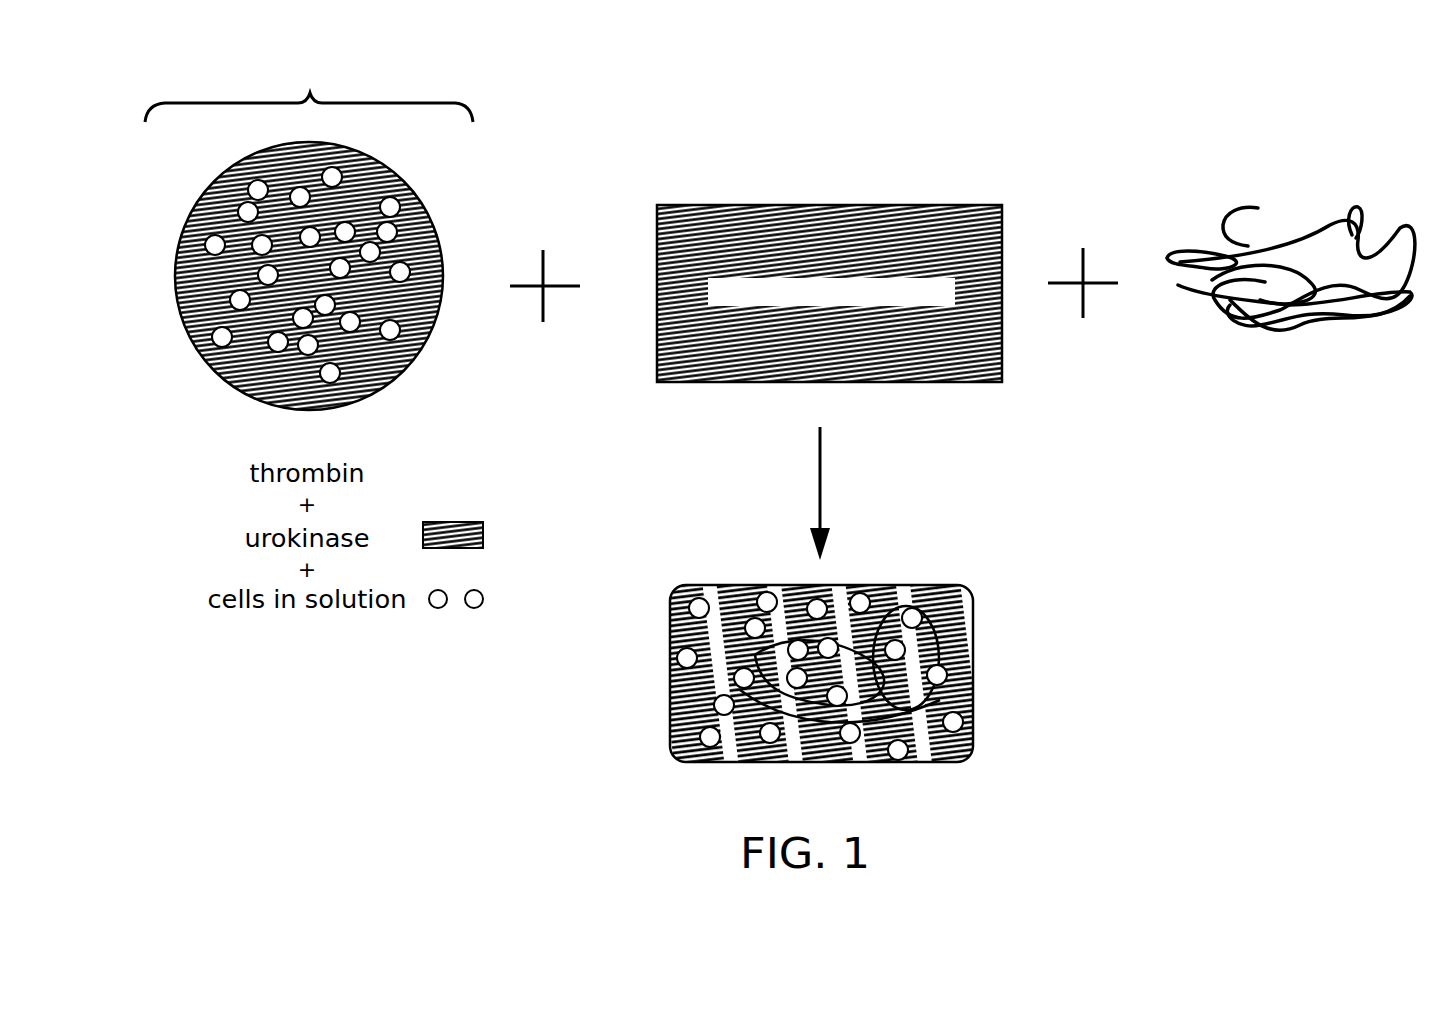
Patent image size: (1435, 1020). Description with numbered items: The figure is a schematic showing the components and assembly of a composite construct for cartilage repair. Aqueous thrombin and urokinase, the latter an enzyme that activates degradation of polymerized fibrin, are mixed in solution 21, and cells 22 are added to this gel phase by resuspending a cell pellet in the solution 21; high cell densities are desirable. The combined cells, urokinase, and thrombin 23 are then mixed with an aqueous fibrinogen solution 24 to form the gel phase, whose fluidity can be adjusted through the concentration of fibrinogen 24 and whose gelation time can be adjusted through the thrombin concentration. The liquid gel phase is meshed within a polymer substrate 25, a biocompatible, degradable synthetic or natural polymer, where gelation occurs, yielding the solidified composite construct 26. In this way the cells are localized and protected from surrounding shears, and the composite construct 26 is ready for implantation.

The solution 21 is at (400, 357).
The cells 22 is at (388, 207).
The cells, urokinase, and thrombin 23 is at (309, 91).
The fibrinogen solution 24 is at (730, 381).
The polymer substrate 25 is at (1357, 203).
The composite construct 26 is at (970, 605).